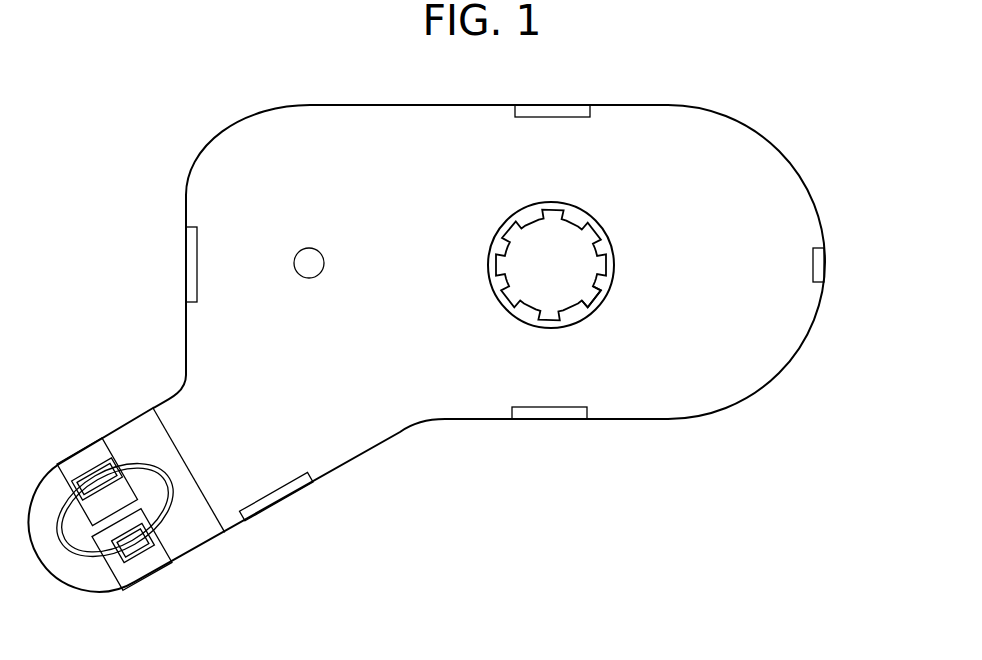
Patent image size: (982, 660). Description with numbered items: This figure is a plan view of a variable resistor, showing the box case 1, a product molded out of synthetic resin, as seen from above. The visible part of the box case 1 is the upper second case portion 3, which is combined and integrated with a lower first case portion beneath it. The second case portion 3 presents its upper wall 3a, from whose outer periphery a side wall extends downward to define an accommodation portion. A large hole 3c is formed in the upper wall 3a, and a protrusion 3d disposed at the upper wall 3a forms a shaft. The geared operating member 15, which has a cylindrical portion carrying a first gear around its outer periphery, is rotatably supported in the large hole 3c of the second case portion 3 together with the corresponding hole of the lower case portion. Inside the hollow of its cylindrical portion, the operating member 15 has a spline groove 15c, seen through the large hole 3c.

The box case 1 is at (773, 142).
The second case portion 3 is at (722, 108).
The upper wall 3a is at (792, 205).
The large hole 3c is at (603, 305).
The protrusion 3d is at (308, 255).
The geared operating member 15 is at (580, 198).
The spline groove 15c is at (583, 300).